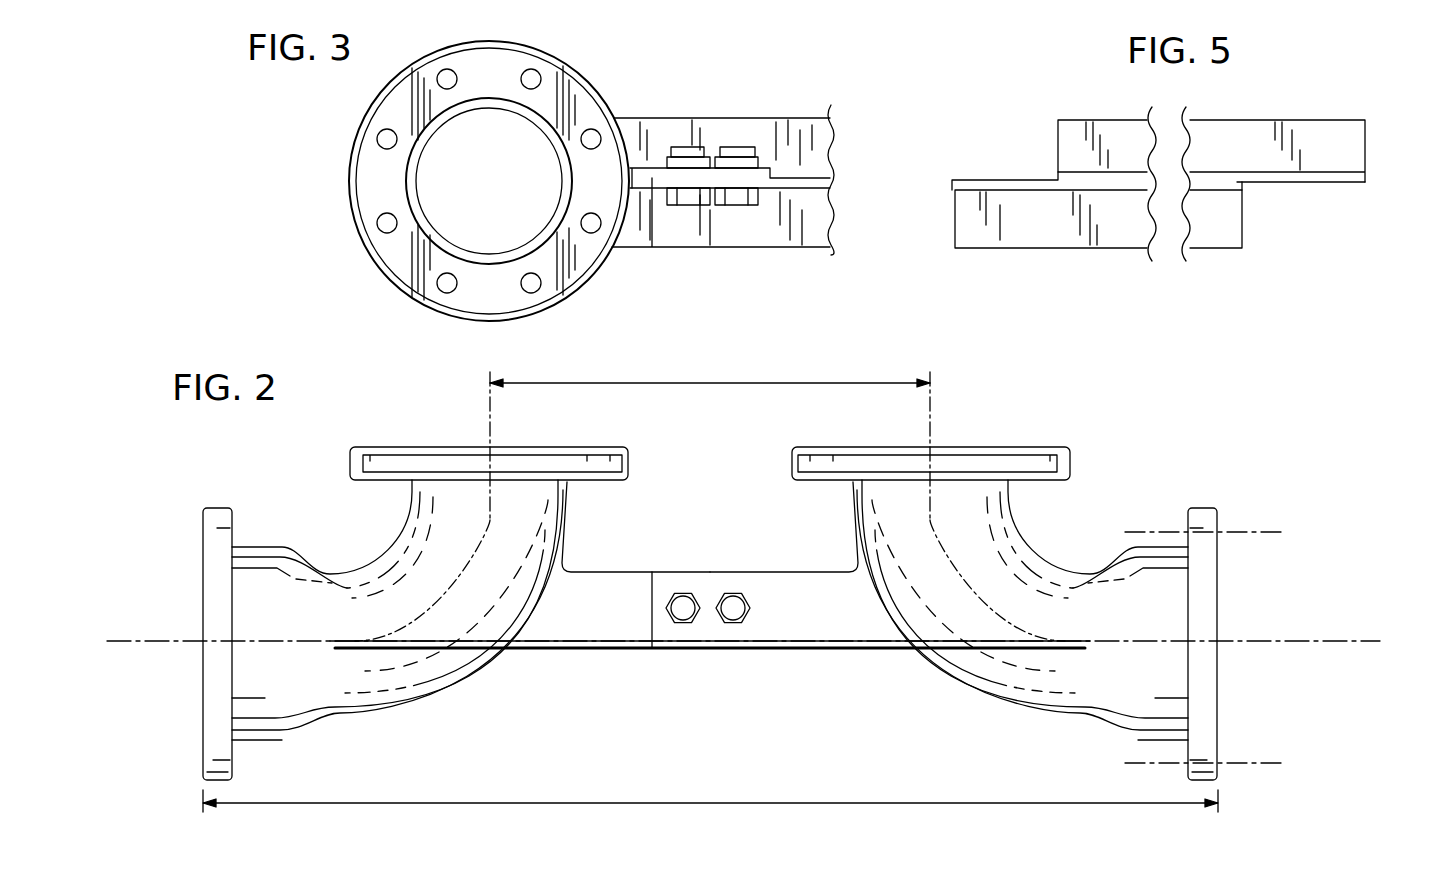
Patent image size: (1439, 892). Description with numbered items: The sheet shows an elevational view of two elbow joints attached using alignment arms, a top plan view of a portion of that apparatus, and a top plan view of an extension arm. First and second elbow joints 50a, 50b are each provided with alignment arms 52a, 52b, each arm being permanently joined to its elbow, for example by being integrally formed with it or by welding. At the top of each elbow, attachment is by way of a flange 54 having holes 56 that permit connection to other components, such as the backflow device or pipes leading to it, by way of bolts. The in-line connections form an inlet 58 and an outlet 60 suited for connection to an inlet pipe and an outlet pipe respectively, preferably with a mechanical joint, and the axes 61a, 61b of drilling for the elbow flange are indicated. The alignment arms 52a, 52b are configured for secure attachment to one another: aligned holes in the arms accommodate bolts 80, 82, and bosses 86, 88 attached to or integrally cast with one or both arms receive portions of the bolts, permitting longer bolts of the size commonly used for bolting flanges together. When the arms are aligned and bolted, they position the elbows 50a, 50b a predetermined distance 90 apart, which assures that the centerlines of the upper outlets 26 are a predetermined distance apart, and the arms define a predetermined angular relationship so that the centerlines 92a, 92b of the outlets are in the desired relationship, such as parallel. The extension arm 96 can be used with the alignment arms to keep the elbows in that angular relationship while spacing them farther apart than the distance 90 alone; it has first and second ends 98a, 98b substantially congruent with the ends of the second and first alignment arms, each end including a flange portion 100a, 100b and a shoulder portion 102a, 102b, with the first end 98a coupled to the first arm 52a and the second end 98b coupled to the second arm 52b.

In FIG. 2, the upper outlets 26 is at (723, 383).
In FIG. 2, the first elbow joint 50a is at (408, 697).
In FIG. 2, the second elbow joint 50b is at (1030, 700).
In FIG. 3, the first alignment arm 52a is at (663, 122).
In FIG. 2, the first alignment arm 52a is at (622, 586).
In FIG. 3, the second alignment arm 52b is at (766, 232).
In FIG. 2, the second alignment arm 52b is at (828, 586).
In FIG. 3, the flange 54 is at (412, 258).
In FIG. 2, the flange 54 is at (420, 460).
In FIG. 3, the holes 56 is at (387, 224).
In FIG. 2, the inlet 58 is at (218, 522).
In FIG. 2, the outlet 60 is at (1203, 516).
In FIG. 2, the axis of drilling 61a is at (1250, 532).
In FIG. 2, the axis of drilling 61b is at (1258, 763).
In FIG. 3, the bolt 80 is at (670, 205).
In FIG. 2, the bolt 80 is at (683, 594).
In FIG. 3, the bolt 82 is at (724, 205).
In FIG. 2, the bolt 82 is at (733, 595).
In FIG. 3, the boss 86 is at (700, 147).
In FIG. 3, the boss 88 is at (752, 147).
In FIG. 2, the predetermined distance 90 is at (746, 803).
In FIG. 2, the centerline of outlet 92a is at (492, 412).
In FIG. 2, the centerline of outlet 92b is at (932, 412).
In FIG. 5, the extension arm 96 is at (1207, 238).
In FIG. 5, the first end of extension arm 98a is at (1037, 110).
In FIG. 5, the second end of extension arm 98b is at (1345, 232).
In FIG. 5, the flange portion 100a is at (966, 183).
In FIG. 5, the flange portion 100b is at (1347, 183).
In FIG. 5, the shoulder portion 102a is at (1056, 172).
In FIG. 5, the shoulder portion 102b is at (1243, 190).